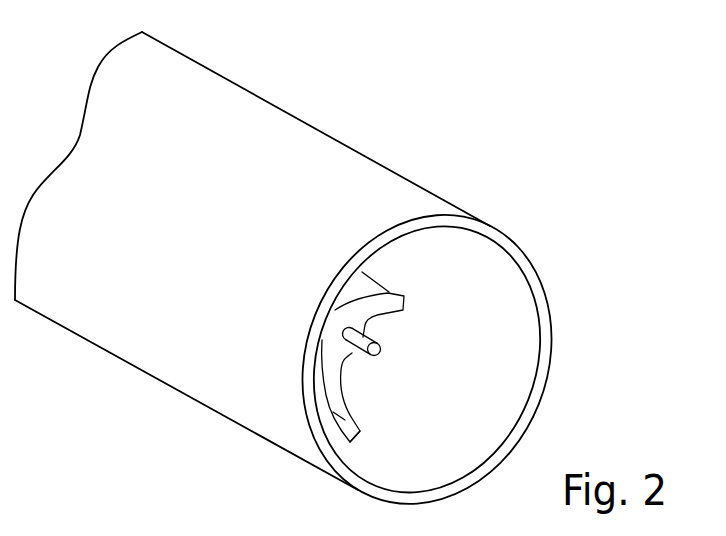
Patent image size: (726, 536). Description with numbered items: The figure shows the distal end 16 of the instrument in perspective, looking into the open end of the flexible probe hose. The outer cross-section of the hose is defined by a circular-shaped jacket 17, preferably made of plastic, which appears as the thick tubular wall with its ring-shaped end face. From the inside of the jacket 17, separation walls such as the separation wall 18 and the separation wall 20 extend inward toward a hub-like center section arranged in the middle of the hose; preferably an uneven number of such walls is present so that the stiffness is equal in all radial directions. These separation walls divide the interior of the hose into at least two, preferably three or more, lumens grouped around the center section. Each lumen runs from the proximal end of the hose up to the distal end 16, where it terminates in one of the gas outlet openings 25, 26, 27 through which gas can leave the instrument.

The distal end 16 is at (366, 154).
The circular-shaped jacket 17 is at (542, 305).
The separation wall 18 is at (392, 293).
The separation wall 20 is at (354, 428).
The gas outlet opening 25 is at (381, 267).
The gas outlet opening 26 is at (332, 413).
The gas outlet opening 27 is at (388, 353).